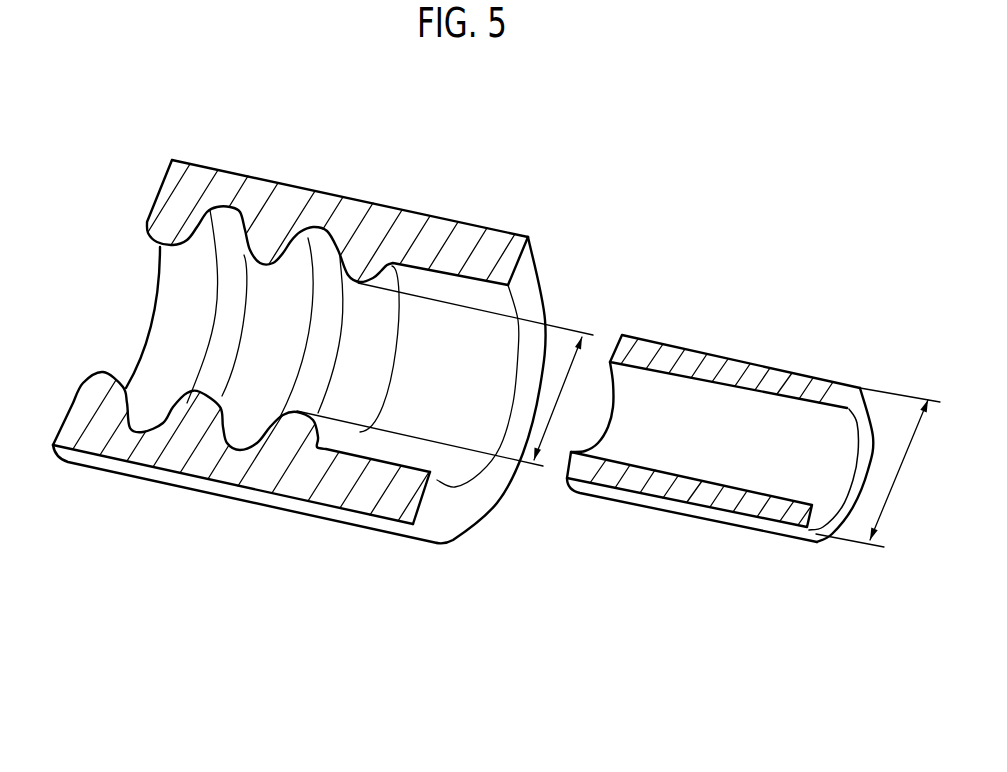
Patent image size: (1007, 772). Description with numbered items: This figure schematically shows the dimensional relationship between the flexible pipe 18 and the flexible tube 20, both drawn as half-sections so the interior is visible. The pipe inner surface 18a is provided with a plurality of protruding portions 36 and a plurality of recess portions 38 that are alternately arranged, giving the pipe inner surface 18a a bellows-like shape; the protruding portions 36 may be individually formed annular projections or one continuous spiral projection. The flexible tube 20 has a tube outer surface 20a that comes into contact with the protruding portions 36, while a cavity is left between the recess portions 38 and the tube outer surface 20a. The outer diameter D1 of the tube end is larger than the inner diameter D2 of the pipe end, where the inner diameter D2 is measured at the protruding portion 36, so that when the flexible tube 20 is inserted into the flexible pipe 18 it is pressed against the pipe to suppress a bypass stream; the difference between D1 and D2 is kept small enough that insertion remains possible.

The flexible pipe 18 is at (363, 200).
The pipe inner surface 18a is at (187, 310).
The flexible tube 20 is at (725, 354).
The tube outer surface 20a is at (642, 498).
The protruding portions 36 is at (268, 264).
The recess portions 38 is at (135, 430).
The outer diameter D1 is at (898, 477).
The inner diameter D2 is at (557, 405).